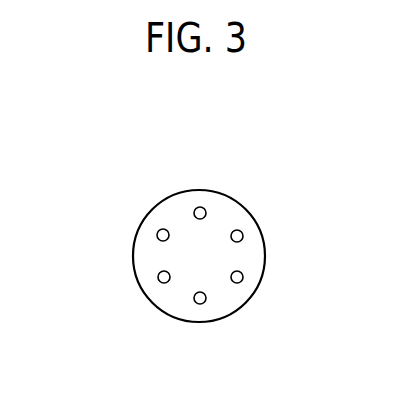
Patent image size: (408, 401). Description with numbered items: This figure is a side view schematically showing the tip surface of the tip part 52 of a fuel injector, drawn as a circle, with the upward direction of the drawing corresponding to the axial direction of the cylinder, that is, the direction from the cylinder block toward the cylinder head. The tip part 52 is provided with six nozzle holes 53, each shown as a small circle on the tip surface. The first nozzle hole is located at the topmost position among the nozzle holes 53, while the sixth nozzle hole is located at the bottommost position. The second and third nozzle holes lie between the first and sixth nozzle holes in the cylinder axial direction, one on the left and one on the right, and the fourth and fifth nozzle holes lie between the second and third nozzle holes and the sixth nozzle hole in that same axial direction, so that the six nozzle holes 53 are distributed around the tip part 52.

The tip part 52 is at (264, 262).
The nozzle holes 53 is at (163, 229).